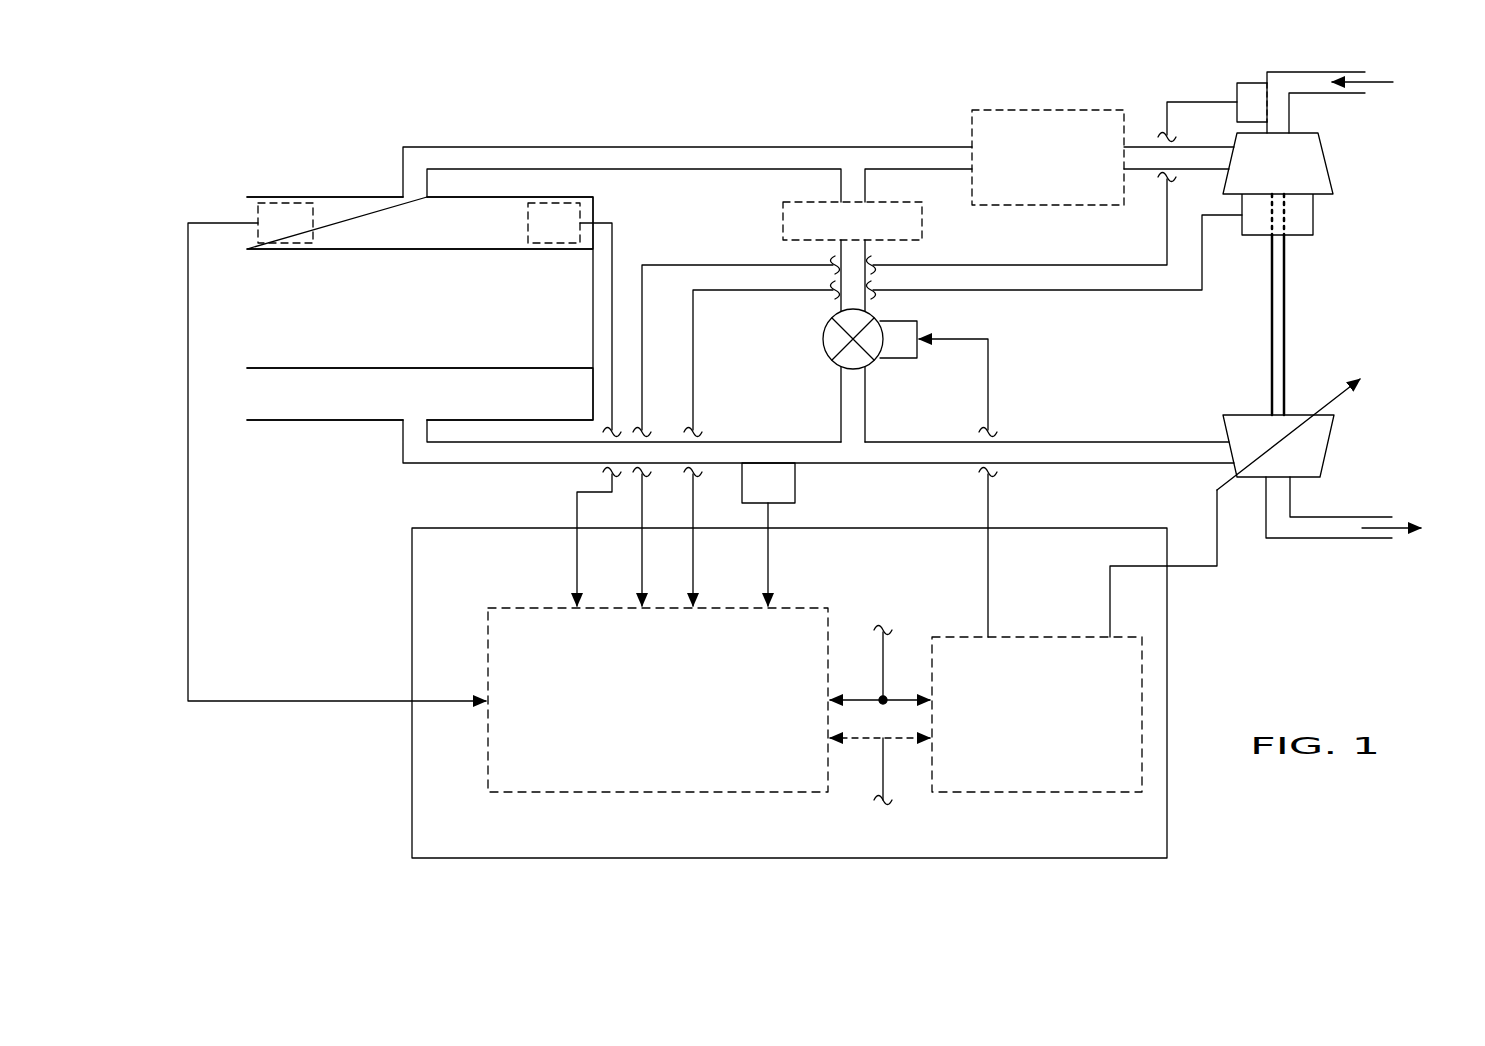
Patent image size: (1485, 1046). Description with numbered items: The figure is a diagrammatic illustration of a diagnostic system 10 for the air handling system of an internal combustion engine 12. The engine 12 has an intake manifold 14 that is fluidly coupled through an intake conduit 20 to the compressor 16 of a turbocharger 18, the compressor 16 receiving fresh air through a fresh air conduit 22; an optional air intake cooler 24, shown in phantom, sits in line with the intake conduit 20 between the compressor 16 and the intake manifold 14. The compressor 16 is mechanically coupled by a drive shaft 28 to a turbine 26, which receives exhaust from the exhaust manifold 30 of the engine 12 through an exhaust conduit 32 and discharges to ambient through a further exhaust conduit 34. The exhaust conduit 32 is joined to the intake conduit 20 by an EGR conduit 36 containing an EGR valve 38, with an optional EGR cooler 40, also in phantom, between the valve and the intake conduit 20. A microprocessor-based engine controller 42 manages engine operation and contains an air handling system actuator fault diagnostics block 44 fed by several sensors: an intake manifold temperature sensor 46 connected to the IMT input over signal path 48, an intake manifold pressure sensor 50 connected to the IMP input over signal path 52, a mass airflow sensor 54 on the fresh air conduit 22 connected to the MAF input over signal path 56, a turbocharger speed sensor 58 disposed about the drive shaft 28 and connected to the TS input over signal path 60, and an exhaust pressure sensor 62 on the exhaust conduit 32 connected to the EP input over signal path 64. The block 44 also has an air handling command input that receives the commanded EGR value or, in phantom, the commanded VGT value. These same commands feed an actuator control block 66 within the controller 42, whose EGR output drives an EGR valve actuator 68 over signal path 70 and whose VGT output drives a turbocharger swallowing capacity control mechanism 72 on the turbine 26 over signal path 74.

The diagnostic system 10 is at (294, 124).
The internal combustion engine 12 is at (247, 320).
The intake manifold 14 is at (362, 197).
The compressor 16 is at (1330, 168).
The turbocharger 18 is at (1314, 297).
The intake conduit 20 is at (818, 147).
The fresh air conduit 22 is at (1330, 93).
The air intake cooler 24 is at (1040, 205).
The turbine 26 is at (1330, 450).
The drive shaft 28 is at (1270, 343).
The exhaust manifold 30 is at (322, 420).
The exhaust conduit 32 is at (515, 463).
The exhaust conduit 34 is at (1328, 538).
The EGR conduit 36 is at (841, 388).
The EGR valve 38 is at (823, 340).
The EGR cooler 40 is at (922, 222).
The engine controller 42 is at (412, 585).
The air handling system actuator fault diagnostics block 44 is at (512, 792).
The intake manifold temperature sensor 46 is at (278, 203).
The signal path 48 is at (188, 530).
The intake manifold pressure sensor 50 is at (582, 211).
The signal path 52 is at (612, 250).
The mass airflow sensor 54 is at (1237, 92).
The signal path 56 is at (697, 265).
The turbocharger speed sensor 58 is at (1255, 237).
The signal path 60 is at (693, 330).
The exhaust pressure sensor 62 is at (795, 488).
The signal path 64 is at (768, 545).
The actuator control block 66 is at (1080, 792).
The EGR valve actuator 68 is at (900, 358).
The signal path 70 is at (988, 388).
The turbocharger swallowing capacity control mechanism 72 is at (1335, 395).
The signal path 74 is at (1192, 566).